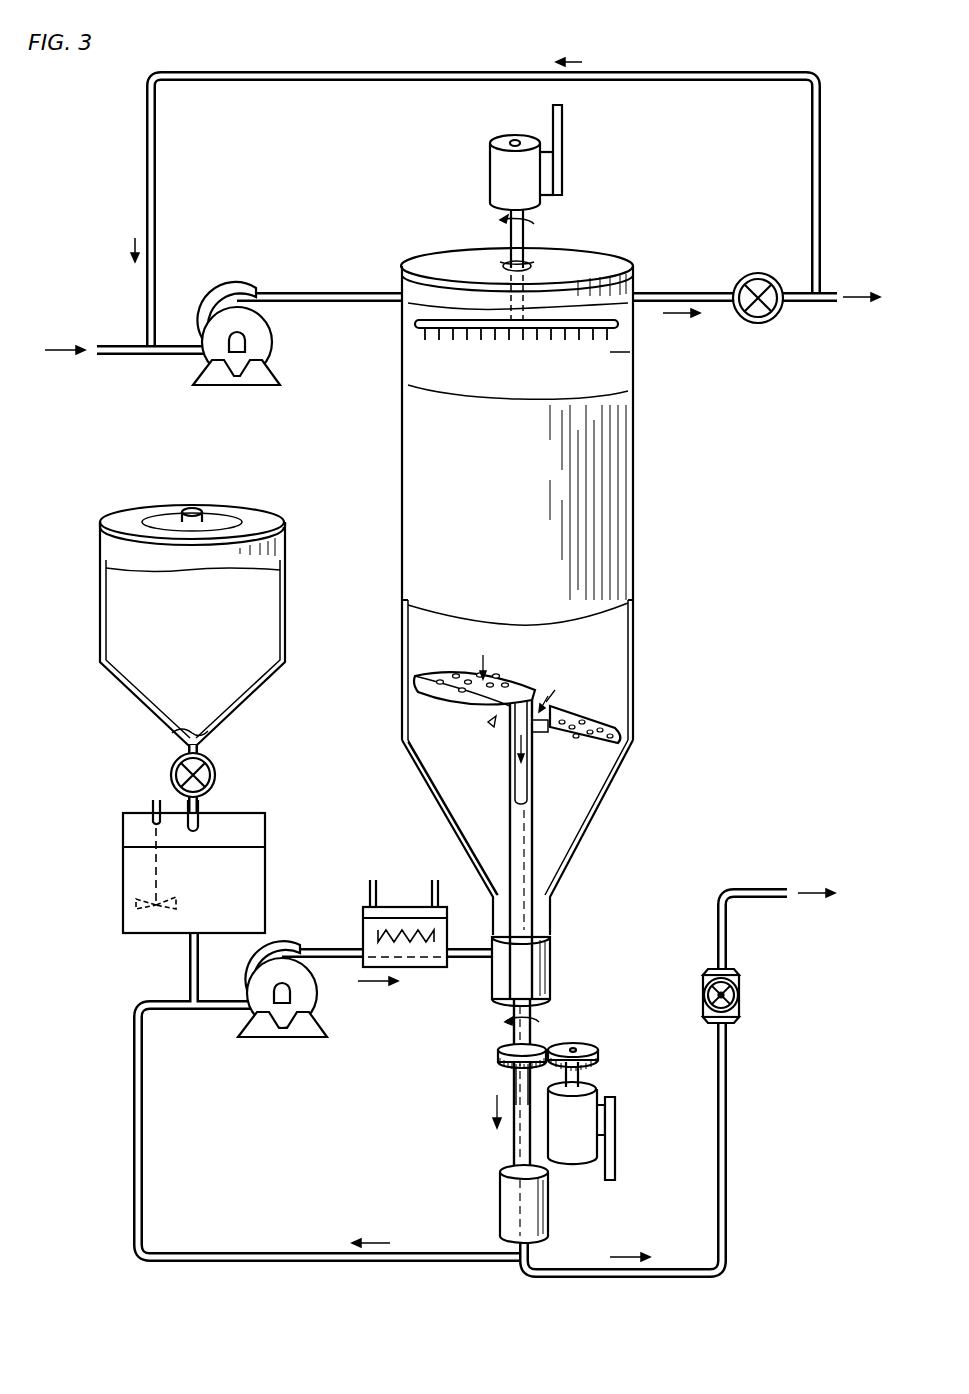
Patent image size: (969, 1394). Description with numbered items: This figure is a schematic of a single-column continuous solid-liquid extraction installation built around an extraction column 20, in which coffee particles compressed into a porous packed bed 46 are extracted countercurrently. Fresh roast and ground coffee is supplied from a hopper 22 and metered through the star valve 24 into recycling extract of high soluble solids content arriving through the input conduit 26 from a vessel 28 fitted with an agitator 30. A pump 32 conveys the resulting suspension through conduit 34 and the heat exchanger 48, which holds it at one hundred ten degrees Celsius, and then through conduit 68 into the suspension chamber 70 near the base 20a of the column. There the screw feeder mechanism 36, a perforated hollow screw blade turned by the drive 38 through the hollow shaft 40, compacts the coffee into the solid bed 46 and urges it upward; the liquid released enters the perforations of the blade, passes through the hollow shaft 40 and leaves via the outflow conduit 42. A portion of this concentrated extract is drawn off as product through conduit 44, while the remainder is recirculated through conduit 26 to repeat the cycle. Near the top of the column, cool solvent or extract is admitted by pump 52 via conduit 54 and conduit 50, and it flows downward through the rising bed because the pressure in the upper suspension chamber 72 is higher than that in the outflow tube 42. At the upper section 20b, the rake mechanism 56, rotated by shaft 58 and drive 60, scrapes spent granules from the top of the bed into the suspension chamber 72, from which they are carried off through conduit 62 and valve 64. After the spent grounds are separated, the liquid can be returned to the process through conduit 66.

The extraction column 20 is at (620, 516).
The base of the column 20a is at (546, 951).
The upper section of the extraction column 20b is at (630, 354).
The hopper 22 is at (285, 598).
The star valve 24 is at (216, 774).
The conduit 26 is at (133, 1081).
The vessel 28 is at (256, 866).
The agitator 30 is at (140, 912).
The pump 32 is at (316, 990).
The conduit 34 is at (317, 952).
The screw feeder mechanism 36 is at (568, 714).
The drive 38 is at (588, 1086).
The hollow shaft 40 is at (524, 845).
The conduit 42 is at (510, 1158).
The conduit 44 is at (673, 1272).
The solid bed 46 is at (406, 659).
The heat exchanger 48 is at (359, 907).
The conduit 50 is at (335, 297).
The pump 52 is at (268, 344).
The conduit 54 is at (133, 359).
The rake mechanism 56 is at (478, 340).
The shaft 58 is at (522, 236).
The drive 60 is at (492, 178).
The conduit 62 is at (668, 296).
The valve 64 is at (757, 274).
The conduit 66 is at (322, 80).
The conduit 68 is at (470, 960).
The suspension chamber 70 is at (452, 784).
The suspension chamber 72 is at (412, 314).